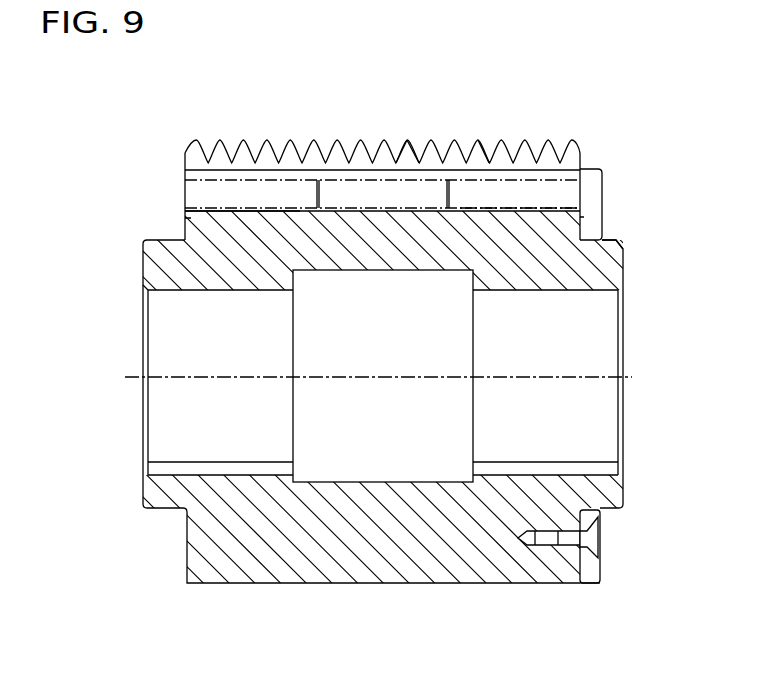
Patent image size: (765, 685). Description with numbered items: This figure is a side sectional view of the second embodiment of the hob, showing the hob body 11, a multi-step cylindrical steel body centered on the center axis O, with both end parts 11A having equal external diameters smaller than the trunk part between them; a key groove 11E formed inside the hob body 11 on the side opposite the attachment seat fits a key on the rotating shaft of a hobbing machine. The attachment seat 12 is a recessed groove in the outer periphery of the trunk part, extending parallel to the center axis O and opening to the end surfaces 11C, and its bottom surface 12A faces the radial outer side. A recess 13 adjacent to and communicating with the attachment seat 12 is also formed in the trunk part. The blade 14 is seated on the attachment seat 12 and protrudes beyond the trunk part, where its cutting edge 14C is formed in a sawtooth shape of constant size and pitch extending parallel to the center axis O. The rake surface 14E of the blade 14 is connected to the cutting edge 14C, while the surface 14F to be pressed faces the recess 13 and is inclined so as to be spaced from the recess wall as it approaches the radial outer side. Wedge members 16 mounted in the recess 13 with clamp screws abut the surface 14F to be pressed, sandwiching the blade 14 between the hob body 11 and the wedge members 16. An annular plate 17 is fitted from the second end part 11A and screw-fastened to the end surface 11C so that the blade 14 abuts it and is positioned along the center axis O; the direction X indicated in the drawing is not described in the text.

The hob body 11 is at (413, 596).
The end parts 11A is at (618, 262).
The end surfaces 11C is at (583, 217).
The key groove 11E is at (590, 460).
The attachment seat 12 is at (178, 188).
The bottom surface 12A is at (210, 197).
The recess 13 is at (487, 218).
The blade 14 is at (324, 133).
The cutting edge 14C is at (412, 146).
The rake surface 14E is at (403, 148).
The surface to be pressed 14F is at (487, 148).
The wedge members 16 is at (522, 197).
The plate 17 is at (594, 572).
The center axis O is at (567, 377).
The direction X is at (387, 22).